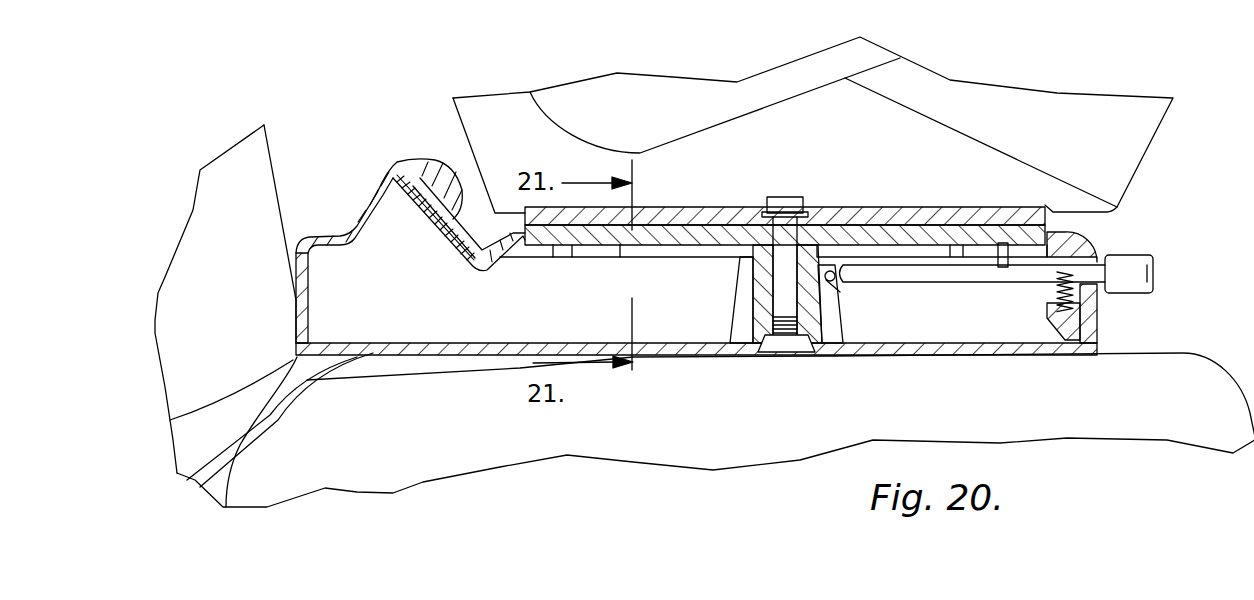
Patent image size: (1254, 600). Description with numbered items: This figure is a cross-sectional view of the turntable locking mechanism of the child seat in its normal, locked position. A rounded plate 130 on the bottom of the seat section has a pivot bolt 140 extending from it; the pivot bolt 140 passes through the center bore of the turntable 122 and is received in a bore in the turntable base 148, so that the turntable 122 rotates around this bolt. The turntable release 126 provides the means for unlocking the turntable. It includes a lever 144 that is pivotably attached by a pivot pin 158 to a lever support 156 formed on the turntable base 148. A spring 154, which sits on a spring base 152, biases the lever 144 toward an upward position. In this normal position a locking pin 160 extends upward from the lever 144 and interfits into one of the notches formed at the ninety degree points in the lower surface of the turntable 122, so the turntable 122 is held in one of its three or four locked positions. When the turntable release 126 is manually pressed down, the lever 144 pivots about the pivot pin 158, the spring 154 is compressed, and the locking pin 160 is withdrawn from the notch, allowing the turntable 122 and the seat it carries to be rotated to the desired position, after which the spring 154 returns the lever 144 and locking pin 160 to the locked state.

The turntable 122 is at (707, 237).
The turntable release 126 is at (1150, 267).
The rounded plate 130 is at (713, 211).
The pivot bolt 140 is at (785, 210).
The lever 144 is at (932, 272).
The turntable base 148 is at (743, 313).
The spring base 152 is at (1066, 320).
The spring 154 is at (1073, 293).
The lever support 156 is at (823, 284).
The pivot pin 158 is at (836, 286).
The locking pin 160 is at (1003, 243).